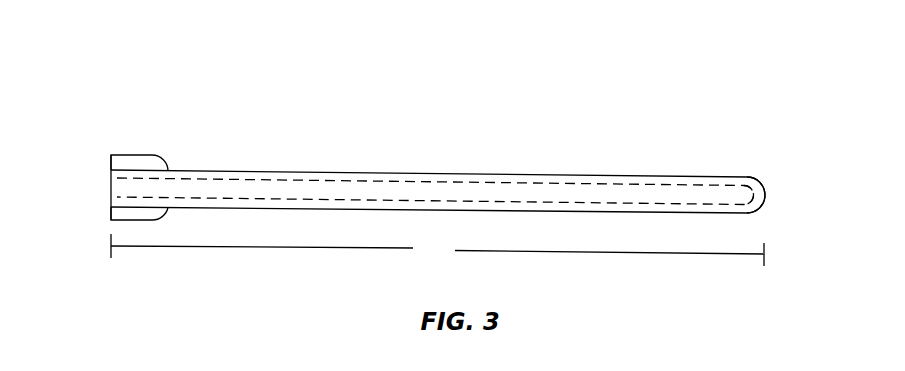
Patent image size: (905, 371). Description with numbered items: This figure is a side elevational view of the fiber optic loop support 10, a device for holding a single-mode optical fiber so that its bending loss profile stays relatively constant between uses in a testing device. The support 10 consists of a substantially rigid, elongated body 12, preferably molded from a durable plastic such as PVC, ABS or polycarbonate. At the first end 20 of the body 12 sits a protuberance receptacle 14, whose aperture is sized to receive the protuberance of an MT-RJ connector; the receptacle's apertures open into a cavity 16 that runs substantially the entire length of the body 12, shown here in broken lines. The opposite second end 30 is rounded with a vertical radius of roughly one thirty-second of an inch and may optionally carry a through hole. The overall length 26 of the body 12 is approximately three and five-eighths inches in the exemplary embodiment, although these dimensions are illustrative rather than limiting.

The fiber optic loop support 10 is at (581, 101).
The body 12 is at (391, 158).
The protuberance receptacle 14 is at (147, 155).
The cavity 16 is at (727, 197).
The first end 20 is at (96, 186).
The length 26 is at (437, 250).
The second end 30 is at (766, 196).